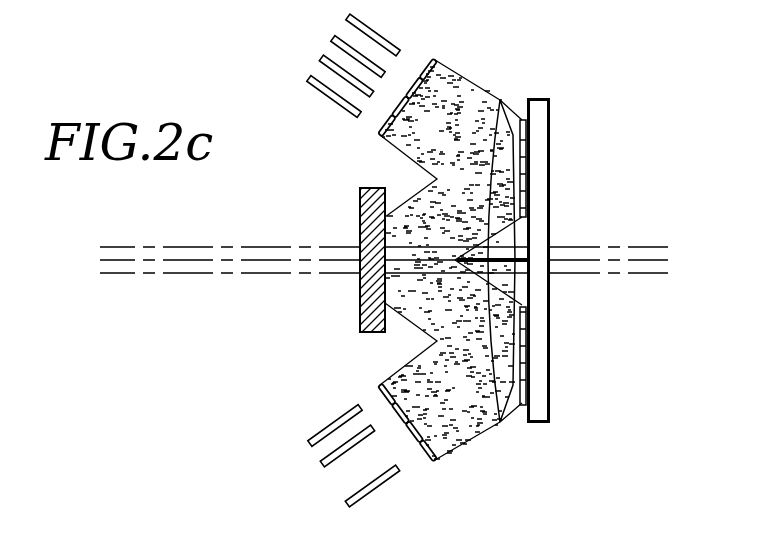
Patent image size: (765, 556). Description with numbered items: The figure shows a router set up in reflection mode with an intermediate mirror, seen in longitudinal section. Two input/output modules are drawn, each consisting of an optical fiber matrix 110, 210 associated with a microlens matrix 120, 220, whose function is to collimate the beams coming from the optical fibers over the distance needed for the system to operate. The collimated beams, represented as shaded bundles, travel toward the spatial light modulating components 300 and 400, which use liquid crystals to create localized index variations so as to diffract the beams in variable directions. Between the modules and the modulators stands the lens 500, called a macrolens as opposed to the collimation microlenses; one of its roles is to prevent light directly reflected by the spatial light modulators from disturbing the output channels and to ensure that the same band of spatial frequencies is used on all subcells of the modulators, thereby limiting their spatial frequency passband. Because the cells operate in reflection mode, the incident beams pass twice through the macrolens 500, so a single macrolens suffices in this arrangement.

The optical fiber matrix 110 is at (342, 46).
The microlens matrix 120 is at (431, 60).
The optical fiber matrix 210 is at (338, 479).
The microlens matrix 220 is at (432, 463).
The spatial light modulating component 300 is at (527, 157).
The spatial light modulating component 400 is at (527, 371).
The lens 500 is at (500, 100).